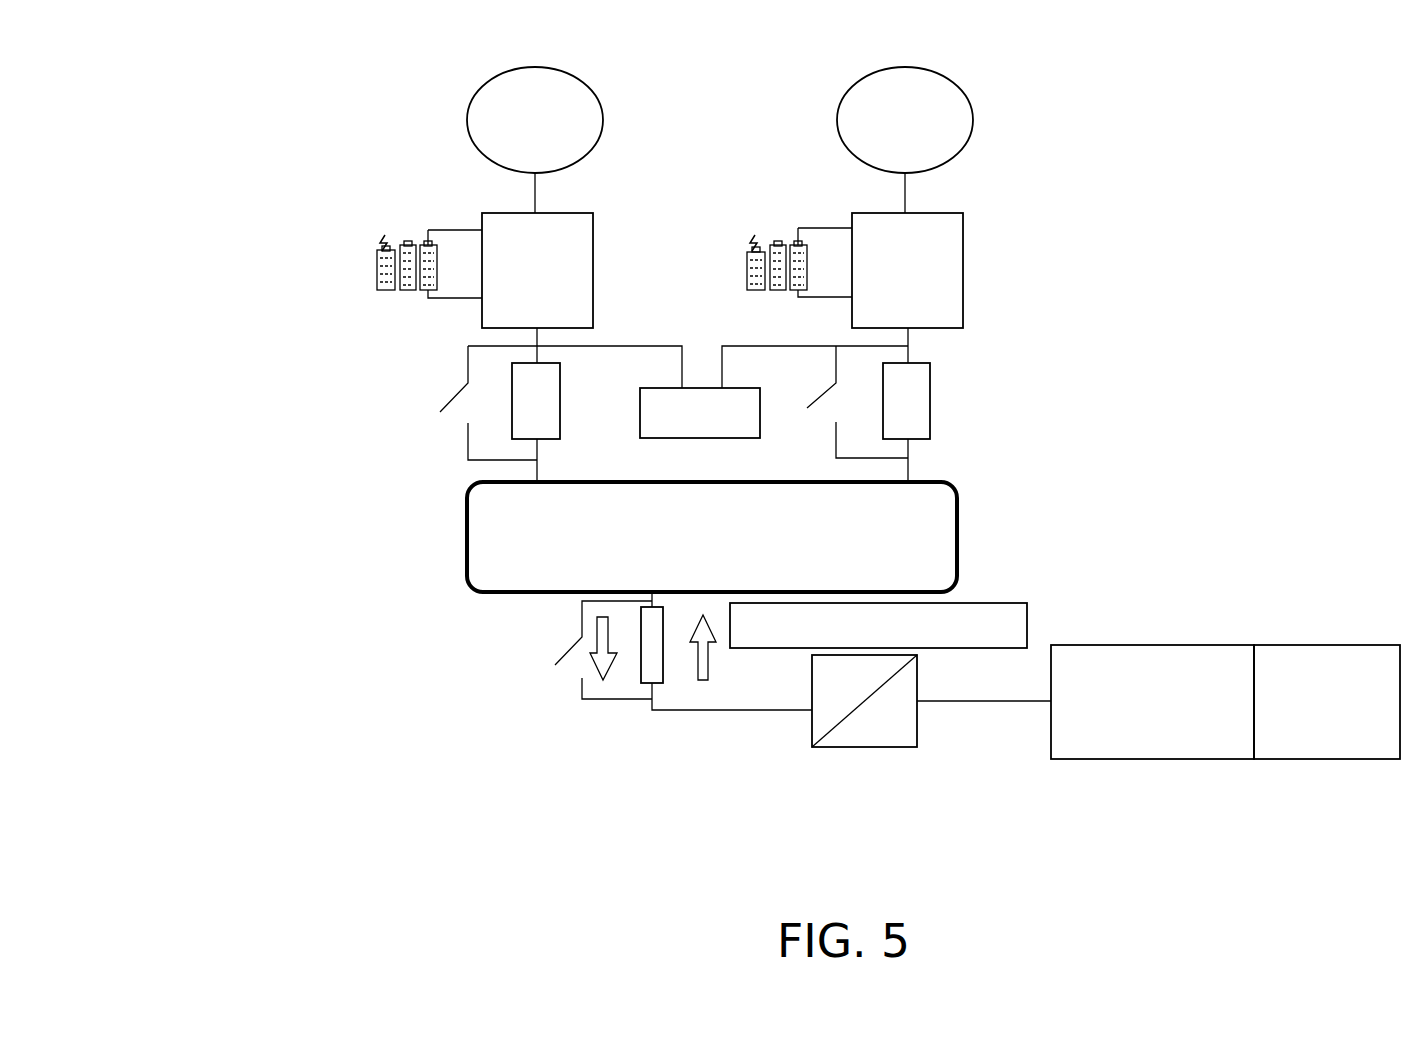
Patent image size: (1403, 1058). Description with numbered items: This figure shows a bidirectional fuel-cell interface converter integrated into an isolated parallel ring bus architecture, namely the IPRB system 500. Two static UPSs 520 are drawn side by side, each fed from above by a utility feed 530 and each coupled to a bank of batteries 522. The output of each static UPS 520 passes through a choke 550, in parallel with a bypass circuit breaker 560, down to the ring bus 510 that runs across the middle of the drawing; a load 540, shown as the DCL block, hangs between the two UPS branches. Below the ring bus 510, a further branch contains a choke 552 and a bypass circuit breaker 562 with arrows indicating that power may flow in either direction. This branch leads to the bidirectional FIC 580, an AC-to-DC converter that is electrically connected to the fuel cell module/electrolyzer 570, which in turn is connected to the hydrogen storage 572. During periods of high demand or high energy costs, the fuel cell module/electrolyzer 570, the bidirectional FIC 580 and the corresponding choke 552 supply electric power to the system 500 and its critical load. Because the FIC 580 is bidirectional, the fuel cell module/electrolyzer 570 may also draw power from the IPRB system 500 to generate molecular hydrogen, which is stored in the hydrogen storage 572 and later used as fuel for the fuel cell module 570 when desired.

The IPRB system 500 is at (205, 126).
The ring bus 510 is at (463, 531).
The static UPS 520 is at (622, 240).
The battery 522 is at (368, 262).
The utility feed 530 is at (840, 82).
The load 540 is at (692, 385).
The choke 550 is at (566, 426).
The choke 552 is at (672, 676).
The bypass circuit breaker 560 is at (432, 397).
The bypass circuit breaker 562 is at (565, 638).
The fuel cell module/electrolyzer 570 is at (1153, 643).
The hydrogen storage 572 is at (1312, 643).
The bidirectional FIC 580 is at (846, 752).